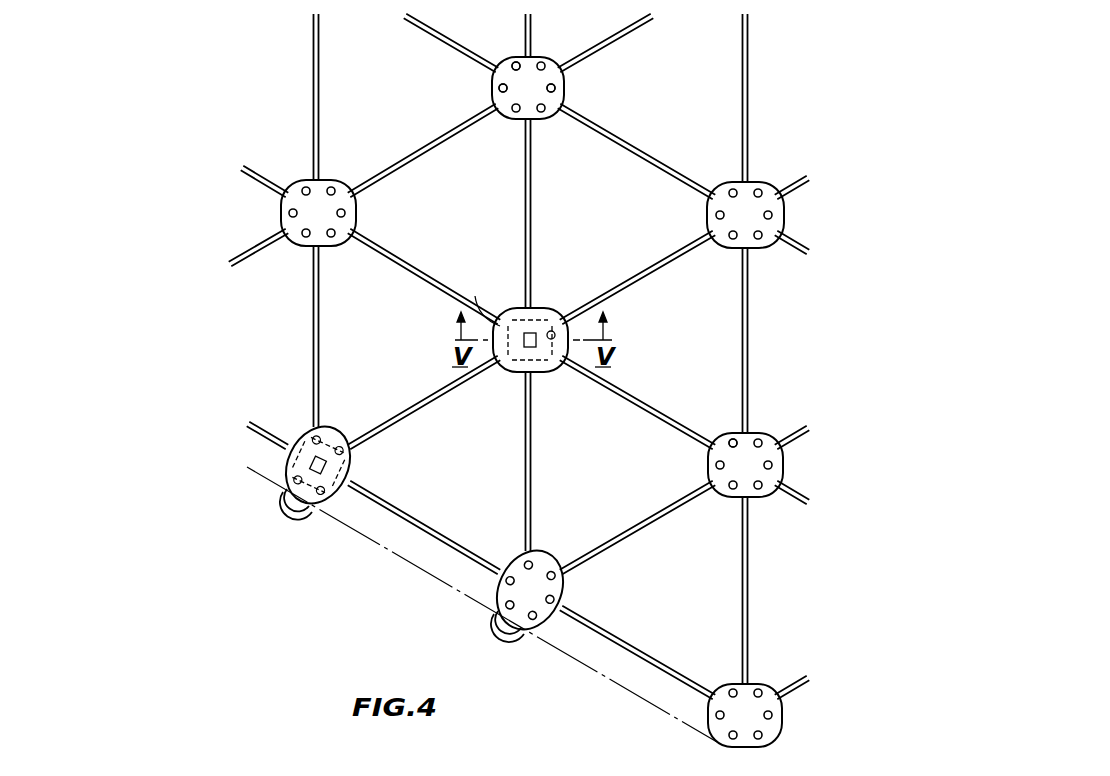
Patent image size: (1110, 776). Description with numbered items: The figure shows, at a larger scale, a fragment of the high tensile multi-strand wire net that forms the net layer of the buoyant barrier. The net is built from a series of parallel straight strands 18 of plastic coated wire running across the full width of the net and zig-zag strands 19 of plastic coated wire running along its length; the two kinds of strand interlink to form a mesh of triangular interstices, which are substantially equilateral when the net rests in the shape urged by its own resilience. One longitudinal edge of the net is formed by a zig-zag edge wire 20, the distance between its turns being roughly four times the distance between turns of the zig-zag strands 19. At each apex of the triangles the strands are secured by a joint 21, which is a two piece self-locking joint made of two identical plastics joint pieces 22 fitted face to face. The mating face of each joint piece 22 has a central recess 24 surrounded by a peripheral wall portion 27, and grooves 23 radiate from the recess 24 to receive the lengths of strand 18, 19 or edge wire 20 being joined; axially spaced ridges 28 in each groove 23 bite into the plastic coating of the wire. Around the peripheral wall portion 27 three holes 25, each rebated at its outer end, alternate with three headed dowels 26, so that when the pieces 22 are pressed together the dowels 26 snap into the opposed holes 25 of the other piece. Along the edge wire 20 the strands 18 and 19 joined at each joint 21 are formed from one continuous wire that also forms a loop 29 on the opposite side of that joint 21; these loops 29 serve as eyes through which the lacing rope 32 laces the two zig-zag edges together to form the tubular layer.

The straight strand 18 is at (320, 142).
The zig-zag strand 19 is at (624, 38).
The zig-zag edge wire 20 is at (428, 520).
The joint 21 is at (572, 101).
The joint piece 22 is at (522, 117).
The groove 23 is at (512, 312).
The central recess 24 is at (520, 377).
The hole 25 is at (514, 62).
The headed dowel 26 is at (497, 92).
The peripheral wall portion 27 is at (353, 500).
The ridge 28 is at (553, 318).
The loop 29 is at (300, 522).
The lacing rope 32 is at (476, 612).